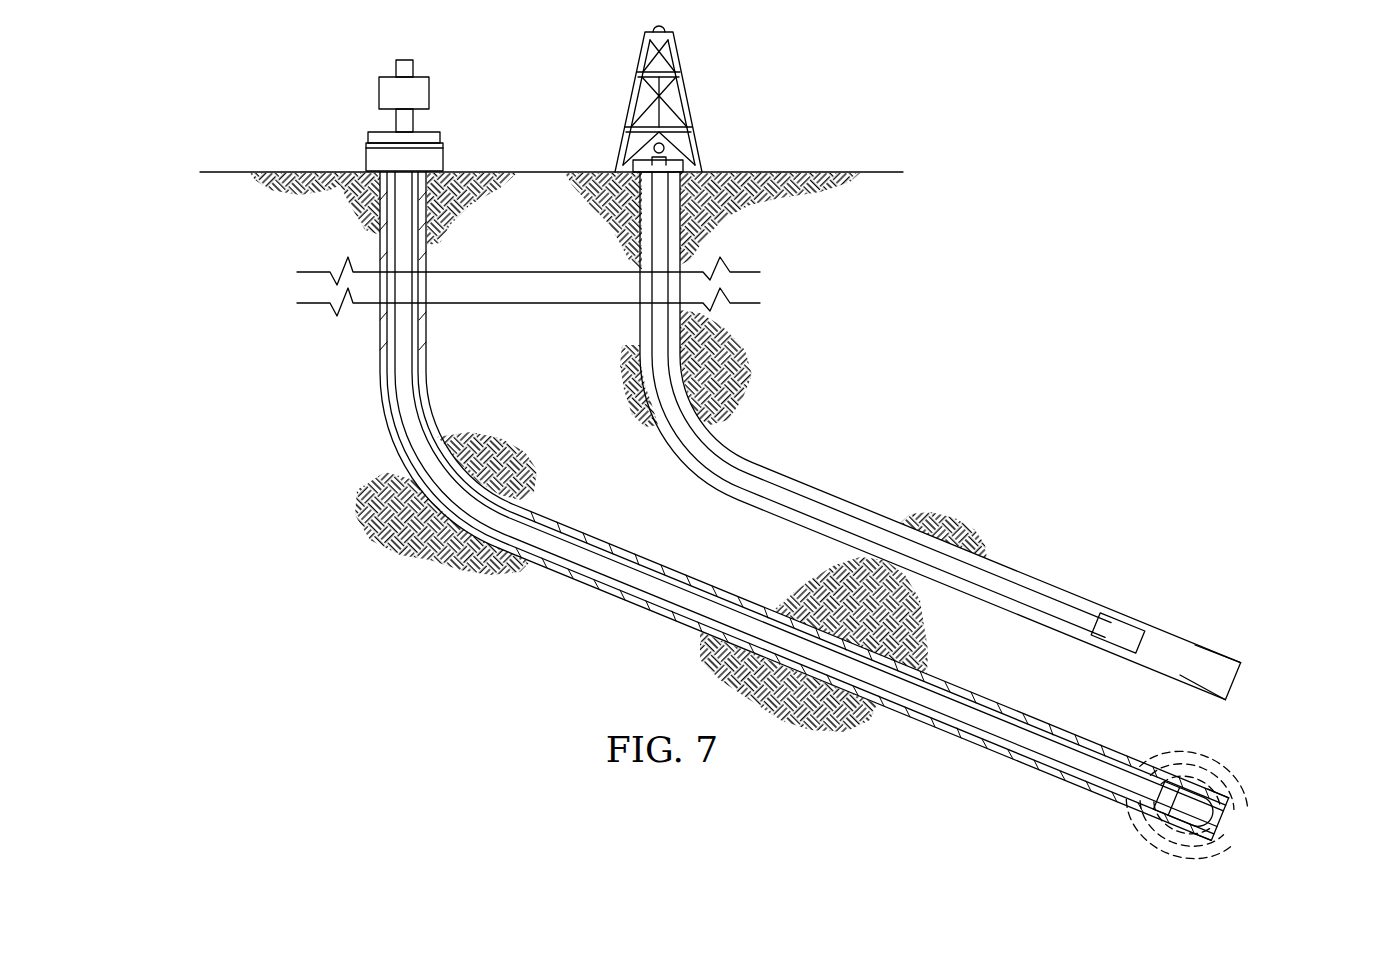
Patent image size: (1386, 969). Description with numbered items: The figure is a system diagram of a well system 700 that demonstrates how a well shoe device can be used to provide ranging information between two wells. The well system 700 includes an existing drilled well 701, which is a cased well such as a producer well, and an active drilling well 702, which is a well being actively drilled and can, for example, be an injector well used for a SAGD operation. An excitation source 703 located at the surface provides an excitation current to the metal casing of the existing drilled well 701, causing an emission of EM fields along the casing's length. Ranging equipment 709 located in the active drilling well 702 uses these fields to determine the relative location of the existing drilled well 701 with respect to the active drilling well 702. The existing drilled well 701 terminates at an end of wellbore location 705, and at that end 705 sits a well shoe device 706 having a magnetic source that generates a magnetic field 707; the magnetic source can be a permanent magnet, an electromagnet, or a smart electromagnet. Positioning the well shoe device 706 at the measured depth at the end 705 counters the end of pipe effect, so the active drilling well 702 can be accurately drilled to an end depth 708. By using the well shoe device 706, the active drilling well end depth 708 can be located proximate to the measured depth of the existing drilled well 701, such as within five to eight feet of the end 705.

The well system 700 is at (508, 71).
The existing drilled well 701 is at (577, 595).
The active drilling well 702 is at (769, 466).
The excitation source 703 is at (376, 92).
The end of wellbore location 705 is at (1226, 820).
The well shoe device 706 is at (1175, 829).
The magnetic field 707 is at (1226, 881).
The active drilling well end depth 708 is at (1214, 670).
The ranging equipment 709 is at (1150, 644).